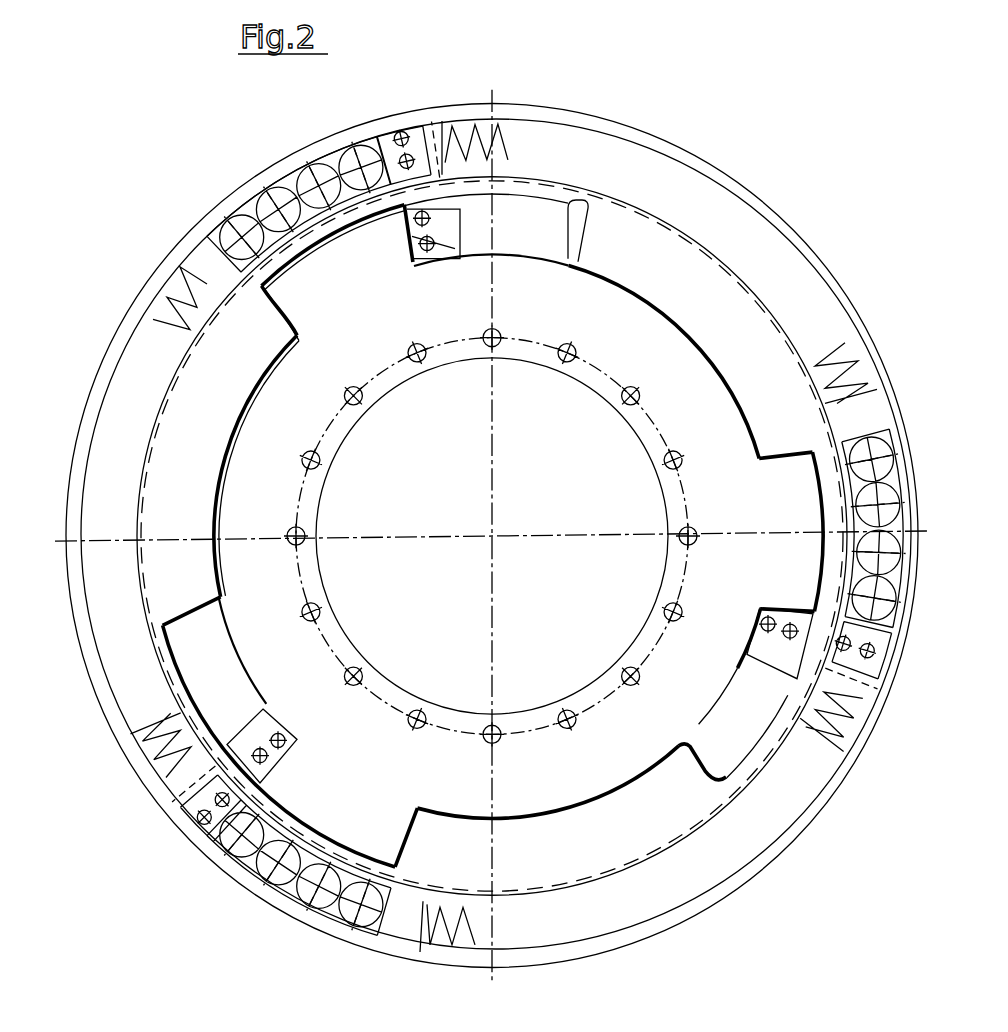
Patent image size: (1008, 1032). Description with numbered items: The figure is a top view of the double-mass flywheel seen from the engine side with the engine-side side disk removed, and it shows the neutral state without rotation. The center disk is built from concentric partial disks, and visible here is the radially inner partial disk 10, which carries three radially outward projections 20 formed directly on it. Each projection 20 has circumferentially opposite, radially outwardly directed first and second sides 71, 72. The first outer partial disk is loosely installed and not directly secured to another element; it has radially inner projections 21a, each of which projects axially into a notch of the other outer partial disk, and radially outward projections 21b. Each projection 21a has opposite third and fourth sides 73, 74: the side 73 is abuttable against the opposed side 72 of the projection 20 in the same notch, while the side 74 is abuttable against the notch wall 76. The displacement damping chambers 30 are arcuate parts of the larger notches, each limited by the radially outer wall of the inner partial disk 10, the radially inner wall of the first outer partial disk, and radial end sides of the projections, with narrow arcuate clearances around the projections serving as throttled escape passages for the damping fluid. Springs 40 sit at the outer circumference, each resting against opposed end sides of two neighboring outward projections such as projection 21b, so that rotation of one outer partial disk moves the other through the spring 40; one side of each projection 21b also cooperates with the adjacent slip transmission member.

The inner partial disk 10 is at (560, 309).
The radially outward projection 20 is at (205, 262).
The radially inner projection 21a is at (440, 222).
The radially outward projection 21b is at (398, 130).
The displacement damping chamber 30 is at (557, 213).
The spring 40 is at (840, 343).
The first side 71 is at (268, 288).
The second side 72 is at (400, 227).
The third side 73 is at (459, 242).
The fourth side 74 is at (450, 222).
The notch wall 76 is at (572, 232).